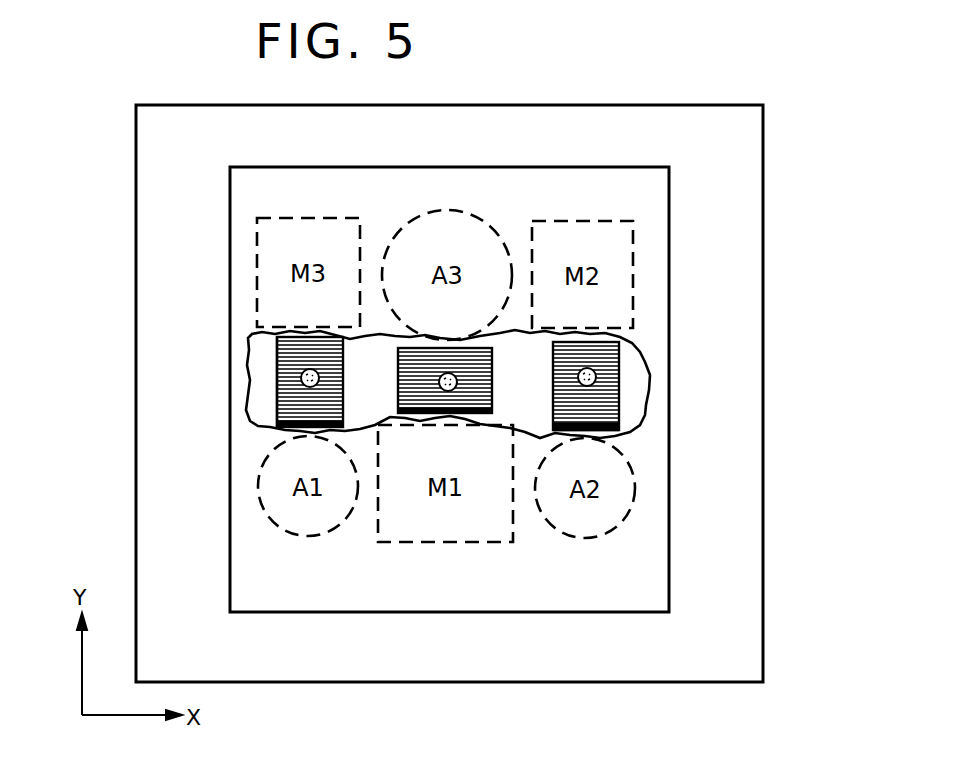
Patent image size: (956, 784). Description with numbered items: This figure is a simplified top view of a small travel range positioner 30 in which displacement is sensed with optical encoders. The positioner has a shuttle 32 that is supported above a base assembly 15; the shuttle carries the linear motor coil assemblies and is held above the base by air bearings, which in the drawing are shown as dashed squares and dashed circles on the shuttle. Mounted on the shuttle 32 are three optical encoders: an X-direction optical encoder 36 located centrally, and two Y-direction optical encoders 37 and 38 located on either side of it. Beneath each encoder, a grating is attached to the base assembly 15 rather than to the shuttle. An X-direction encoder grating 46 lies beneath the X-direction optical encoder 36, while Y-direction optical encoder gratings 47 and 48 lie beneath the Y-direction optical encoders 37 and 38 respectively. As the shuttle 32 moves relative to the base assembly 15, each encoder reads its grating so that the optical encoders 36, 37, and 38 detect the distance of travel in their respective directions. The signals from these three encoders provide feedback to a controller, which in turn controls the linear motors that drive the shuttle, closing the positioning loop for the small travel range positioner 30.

The base assembly 15 is at (763, 515).
The small travel range positioner 30 is at (842, 608).
The shuttle 32 is at (669, 457).
The X-direction optical encoder 36 is at (460, 382).
The Y-direction optical encoder 37 is at (596, 375).
The Y-direction optical encoder 38 is at (300, 377).
The X-direction encoder grating 46 is at (486, 347).
The Y-direction optical encoder grating 47 is at (620, 388).
The Y-direction optical encoder grating 48 is at (277, 407).